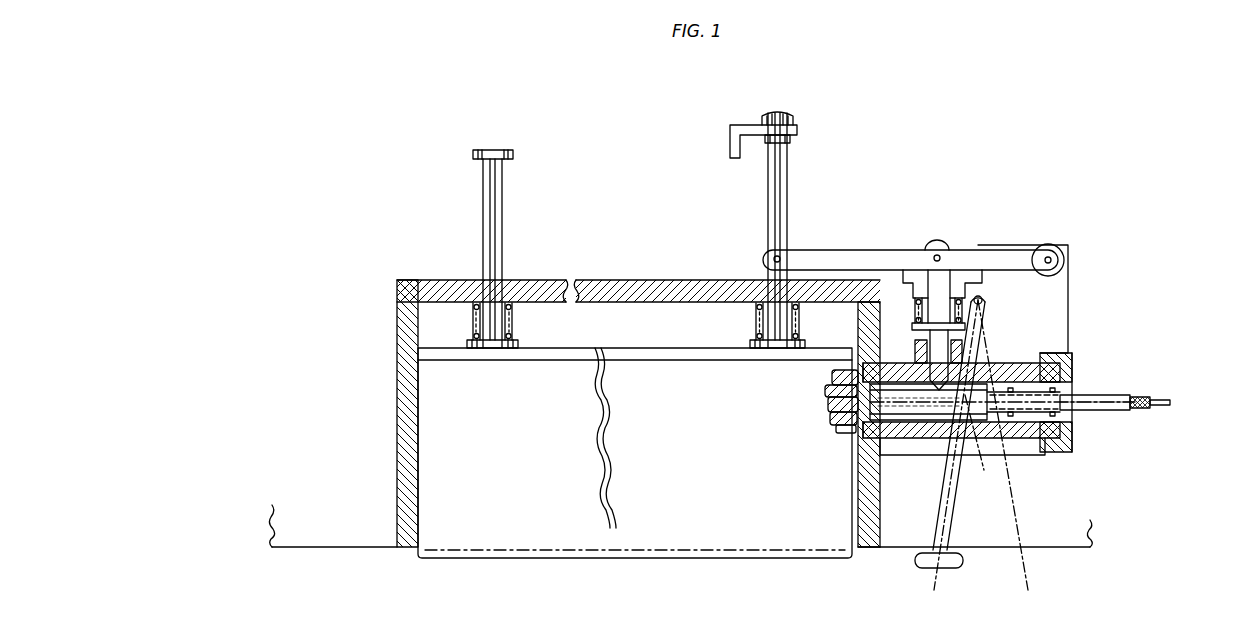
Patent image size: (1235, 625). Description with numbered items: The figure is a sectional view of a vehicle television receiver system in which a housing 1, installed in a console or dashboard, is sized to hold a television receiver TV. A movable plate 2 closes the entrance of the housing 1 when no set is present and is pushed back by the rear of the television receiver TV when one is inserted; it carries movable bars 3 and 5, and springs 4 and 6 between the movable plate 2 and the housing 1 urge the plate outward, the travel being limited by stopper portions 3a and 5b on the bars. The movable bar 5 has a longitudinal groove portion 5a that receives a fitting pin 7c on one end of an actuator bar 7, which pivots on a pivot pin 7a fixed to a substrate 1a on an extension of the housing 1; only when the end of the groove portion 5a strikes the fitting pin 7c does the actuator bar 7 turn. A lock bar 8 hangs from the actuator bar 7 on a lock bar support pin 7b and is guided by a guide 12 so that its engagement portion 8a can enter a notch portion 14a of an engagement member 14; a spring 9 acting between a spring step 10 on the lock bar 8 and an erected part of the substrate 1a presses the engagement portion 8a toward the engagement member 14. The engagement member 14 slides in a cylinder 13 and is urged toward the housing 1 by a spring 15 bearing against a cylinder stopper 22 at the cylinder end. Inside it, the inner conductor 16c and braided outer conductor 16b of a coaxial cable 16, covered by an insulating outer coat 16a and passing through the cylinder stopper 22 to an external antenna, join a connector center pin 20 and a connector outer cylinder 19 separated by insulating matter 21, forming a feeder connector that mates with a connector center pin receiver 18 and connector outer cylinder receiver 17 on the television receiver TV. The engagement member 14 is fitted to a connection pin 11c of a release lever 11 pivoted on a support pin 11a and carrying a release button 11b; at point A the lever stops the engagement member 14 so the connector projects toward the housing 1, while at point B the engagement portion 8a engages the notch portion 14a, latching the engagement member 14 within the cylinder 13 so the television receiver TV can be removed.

The housing 1 is at (873, 549).
The substrate 1a is at (998, 245).
The movable plate 2 is at (414, 345).
The movable bar 3 is at (483, 209).
The stopper portion 3a is at (473, 154).
The spring 4 is at (477, 302).
The movable bar 5 is at (769, 293).
The groove portion 5a is at (777, 232).
The stopper portion 5b is at (736, 130).
The spring 6 is at (757, 309).
The actuator bar 7 is at (815, 254).
The pivot pin 7a is at (1048, 244).
The lock bar support pin 7b is at (937, 250).
The fitting pin 7c is at (779, 258).
The lock bar 8 is at (941, 279).
The engagement portion 8a is at (915, 360).
The spring 9 is at (918, 302).
The spring step 10 is at (972, 350).
The release lever 11 is at (978, 324).
The support pin 11a is at (985, 298).
The release button 11b is at (950, 565).
The connection pin 11c is at (982, 442).
The guide 12 is at (965, 358).
The cylinder 13 is at (1072, 376).
The engagement member 14 is at (913, 440).
The notch portion 14a is at (868, 361).
The spring 15 is at (1066, 450).
The coaxial cable 16 is at (1113, 414).
The insulating outer coat 16a is at (1132, 410).
The outer conductor 16b is at (1144, 408).
The inner conductor 16c is at (1170, 402).
The connector outer cylinder receiver 17 is at (830, 377).
The connector center pin receiver 18 is at (827, 405).
The connector outer cylinder 19 is at (825, 390).
The connector center pin 20 is at (835, 418).
The insulating matter 21 is at (846, 433).
The cylinder stopper 22 is at (1044, 455).
The television receiver TV is at (427, 483).
The point A is at (953, 452).
The point B is at (1008, 453).